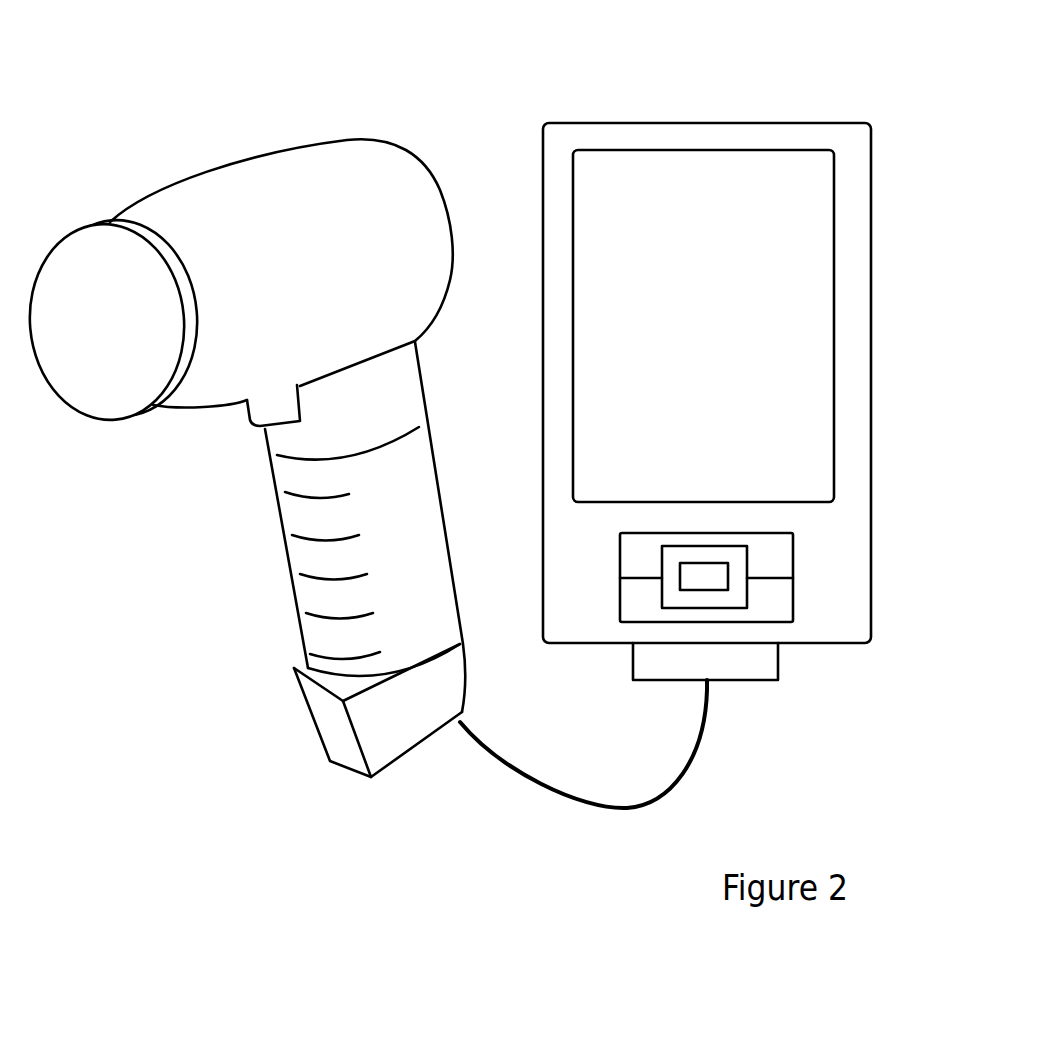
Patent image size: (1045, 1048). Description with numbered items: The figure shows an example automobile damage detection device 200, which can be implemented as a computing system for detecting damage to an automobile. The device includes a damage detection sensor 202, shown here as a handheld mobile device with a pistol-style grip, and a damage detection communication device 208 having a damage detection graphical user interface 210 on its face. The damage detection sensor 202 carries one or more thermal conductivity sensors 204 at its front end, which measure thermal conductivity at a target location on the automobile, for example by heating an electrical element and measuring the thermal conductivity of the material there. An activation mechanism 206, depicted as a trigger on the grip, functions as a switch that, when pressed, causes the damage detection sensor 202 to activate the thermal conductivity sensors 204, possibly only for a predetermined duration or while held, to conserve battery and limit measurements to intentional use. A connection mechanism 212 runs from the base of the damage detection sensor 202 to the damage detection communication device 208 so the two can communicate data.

The automobile damage detection device 200 is at (685, 57).
The damage detection sensor 202 is at (244, 438).
The thermal conductivity sensor 204 is at (188, 268).
The activation mechanism 206 is at (302, 418).
The damage detection communication device 208 is at (746, 401).
The damage detection graphical user interface 210 is at (835, 333).
The connection mechanism 212 is at (710, 740).